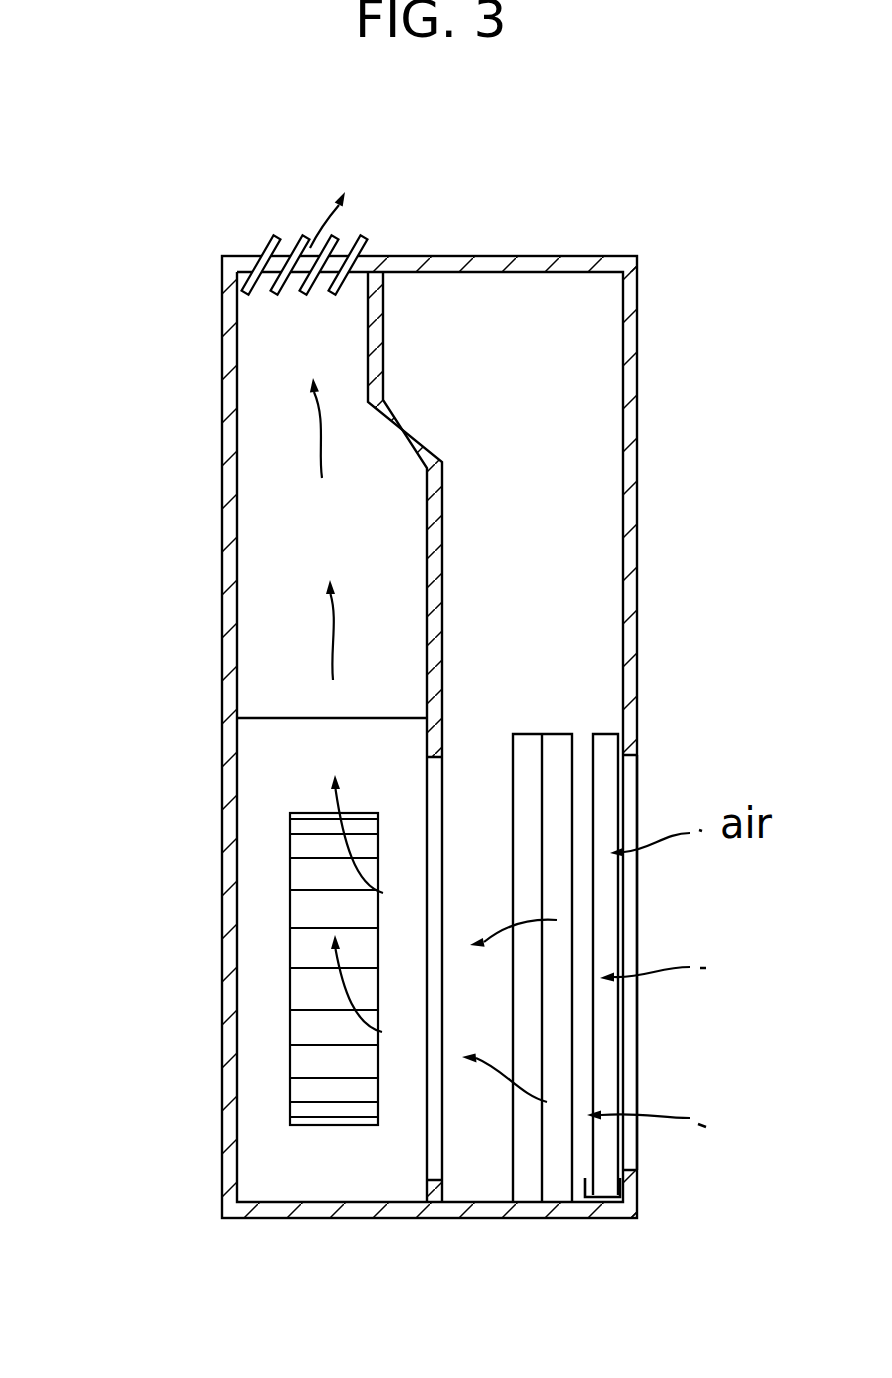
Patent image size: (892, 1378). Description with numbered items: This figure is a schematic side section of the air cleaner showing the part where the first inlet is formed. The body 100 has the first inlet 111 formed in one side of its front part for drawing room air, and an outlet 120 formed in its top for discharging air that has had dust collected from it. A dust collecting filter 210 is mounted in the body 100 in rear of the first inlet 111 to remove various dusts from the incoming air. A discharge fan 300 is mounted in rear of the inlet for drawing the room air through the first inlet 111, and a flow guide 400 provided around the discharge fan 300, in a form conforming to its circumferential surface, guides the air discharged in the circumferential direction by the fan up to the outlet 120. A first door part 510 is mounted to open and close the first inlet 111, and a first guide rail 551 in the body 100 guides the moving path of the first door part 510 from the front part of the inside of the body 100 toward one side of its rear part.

The body 100 is at (232, 468).
The first inlet 111 is at (632, 1042).
The outlet 120 is at (286, 250).
The dust collecting filter 210 is at (528, 1188).
The discharge fan 300 is at (303, 990).
The flow guide 400 is at (433, 575).
The first door part 510 is at (608, 788).
The first guide rail 551 is at (578, 1200).